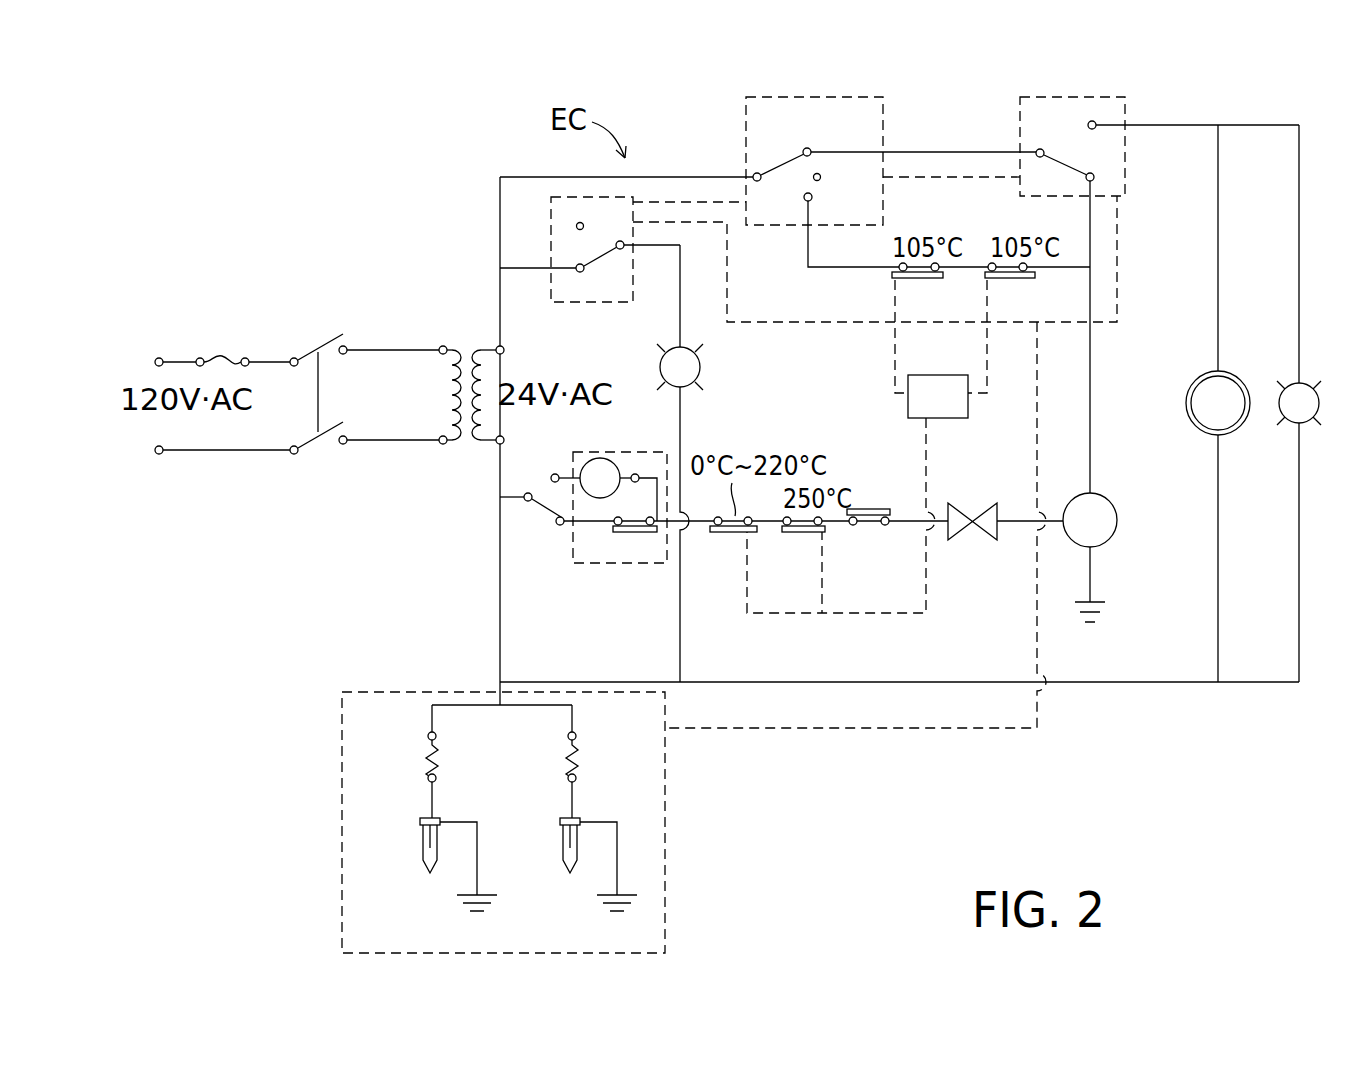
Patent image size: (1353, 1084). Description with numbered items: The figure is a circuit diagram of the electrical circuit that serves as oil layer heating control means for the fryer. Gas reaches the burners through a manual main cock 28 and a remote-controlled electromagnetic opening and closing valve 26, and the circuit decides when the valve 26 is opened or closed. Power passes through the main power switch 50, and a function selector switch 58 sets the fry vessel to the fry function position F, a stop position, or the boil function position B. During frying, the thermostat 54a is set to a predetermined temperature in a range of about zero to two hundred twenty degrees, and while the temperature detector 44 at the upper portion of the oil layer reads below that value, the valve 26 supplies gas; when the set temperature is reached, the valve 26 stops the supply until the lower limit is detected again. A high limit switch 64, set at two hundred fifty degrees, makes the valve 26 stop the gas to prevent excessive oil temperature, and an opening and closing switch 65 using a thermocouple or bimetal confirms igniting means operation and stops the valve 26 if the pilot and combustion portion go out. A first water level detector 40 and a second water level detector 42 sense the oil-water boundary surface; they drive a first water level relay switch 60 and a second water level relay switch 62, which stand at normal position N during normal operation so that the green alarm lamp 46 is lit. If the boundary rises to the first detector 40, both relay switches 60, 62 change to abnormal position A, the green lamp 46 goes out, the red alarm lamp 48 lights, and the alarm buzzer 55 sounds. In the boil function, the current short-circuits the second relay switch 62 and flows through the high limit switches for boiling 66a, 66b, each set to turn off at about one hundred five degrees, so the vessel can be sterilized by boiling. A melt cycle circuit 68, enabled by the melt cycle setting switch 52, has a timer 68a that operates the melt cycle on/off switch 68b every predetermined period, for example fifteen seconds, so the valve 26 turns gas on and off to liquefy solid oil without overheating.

The electromagnetic opening and closing valve 26 is at (1118, 525).
The manual main cock 28 is at (963, 530).
The first water level detector 40 is at (415, 848).
The second water level detector 42 is at (557, 848).
The temperature detector 44 is at (938, 396).
The alarm lamp 46 is at (700, 363).
The alarm lamp 48 is at (1277, 407).
The main power switch 50 is at (330, 445).
The melt cycle setting switch 52 is at (540, 510).
The thermostat 54a is at (728, 533).
The alarm buzzer 55 is at (1187, 405).
The function selector switch 58 is at (773, 152).
The first water level relay switch 60 is at (570, 238).
The second water level relay switch 62 is at (1067, 147).
The high limit switch 64 is at (798, 533).
The opening and closing switch 65 is at (872, 527).
The high limit switch for boiling 66a is at (908, 280).
The high limit switch for boiling 66b is at (1005, 280).
The melt cycle circuit 68 is at (590, 452).
The timer 68a is at (622, 472).
The melt cycle on/off switch 68b is at (638, 533).